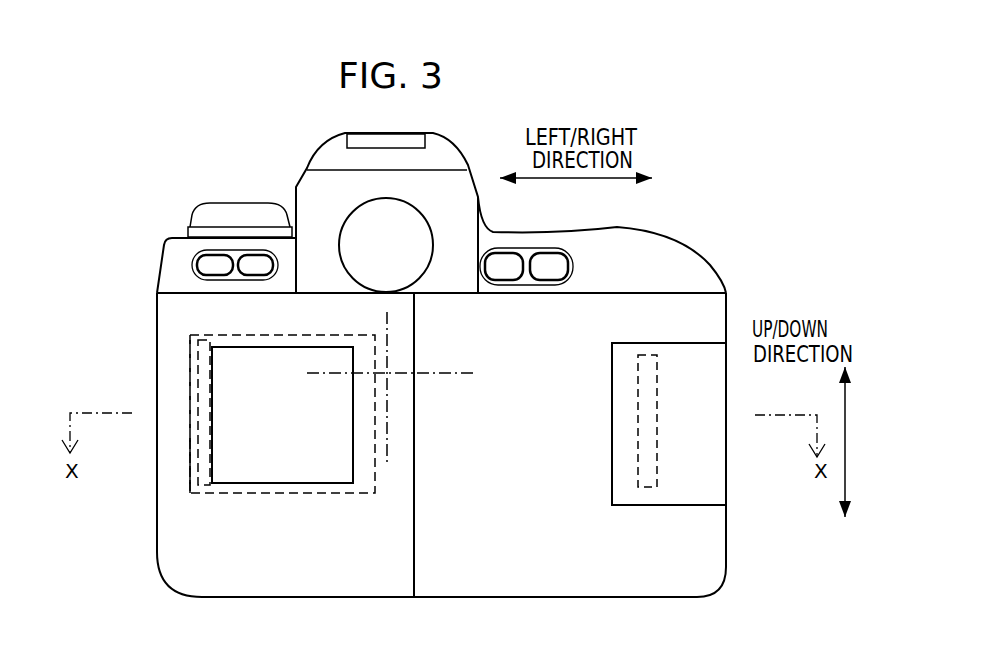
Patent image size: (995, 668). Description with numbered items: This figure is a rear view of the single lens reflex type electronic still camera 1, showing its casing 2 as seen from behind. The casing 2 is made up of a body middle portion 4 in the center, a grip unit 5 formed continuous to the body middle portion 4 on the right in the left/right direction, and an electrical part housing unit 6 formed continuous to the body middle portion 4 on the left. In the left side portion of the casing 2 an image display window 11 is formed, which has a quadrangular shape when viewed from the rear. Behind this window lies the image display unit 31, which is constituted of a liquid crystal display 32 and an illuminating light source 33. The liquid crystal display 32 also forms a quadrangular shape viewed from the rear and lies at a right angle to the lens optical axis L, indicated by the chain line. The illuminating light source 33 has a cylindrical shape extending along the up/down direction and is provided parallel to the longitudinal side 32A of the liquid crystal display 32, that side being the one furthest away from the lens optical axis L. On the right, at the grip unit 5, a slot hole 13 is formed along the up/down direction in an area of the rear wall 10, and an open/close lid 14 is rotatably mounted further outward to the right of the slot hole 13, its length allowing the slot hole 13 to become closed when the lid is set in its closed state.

The single lens reflex type electronic still camera 1 is at (712, 193).
The casing 2 is at (726, 312).
The body middle portion 4 is at (540, 473).
The grip unit 5 is at (672, 547).
The electrical part housing unit 6 is at (175, 315).
The rear wall 10 is at (470, 547).
The image display window 11 is at (353, 442).
The slot hole 13 is at (638, 380).
The open/close lid 14 is at (627, 453).
The image display unit 31 is at (187, 443).
The liquid crystal display 32 is at (263, 493).
The longitudinal side 32A is at (188, 392).
The illuminating light source 33 is at (188, 365).
The lens optical axis L is at (387, 373).